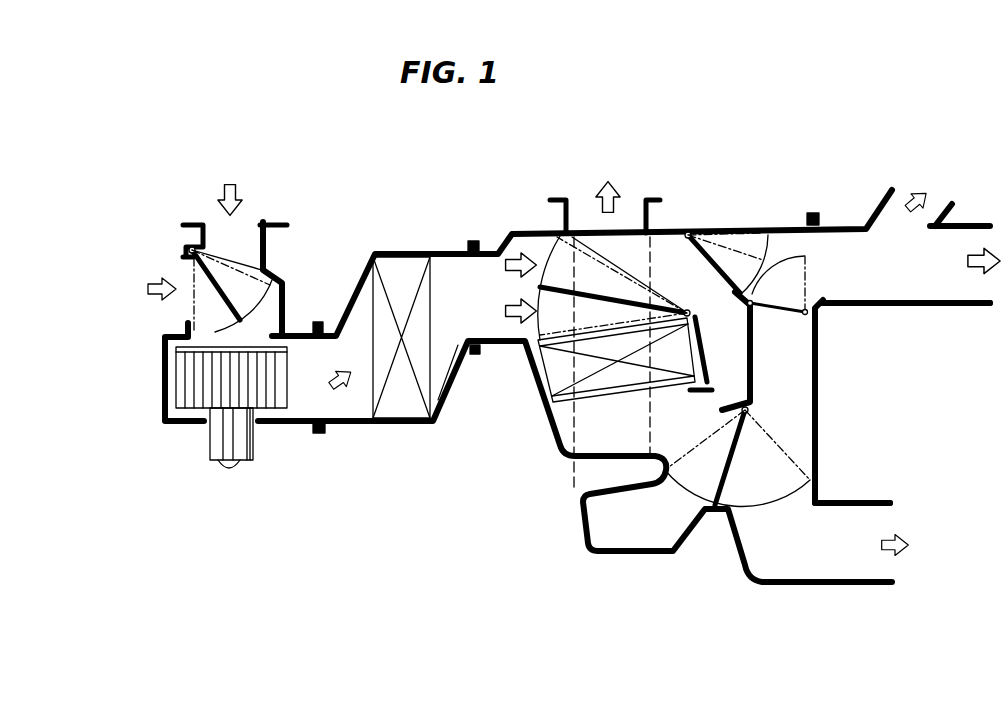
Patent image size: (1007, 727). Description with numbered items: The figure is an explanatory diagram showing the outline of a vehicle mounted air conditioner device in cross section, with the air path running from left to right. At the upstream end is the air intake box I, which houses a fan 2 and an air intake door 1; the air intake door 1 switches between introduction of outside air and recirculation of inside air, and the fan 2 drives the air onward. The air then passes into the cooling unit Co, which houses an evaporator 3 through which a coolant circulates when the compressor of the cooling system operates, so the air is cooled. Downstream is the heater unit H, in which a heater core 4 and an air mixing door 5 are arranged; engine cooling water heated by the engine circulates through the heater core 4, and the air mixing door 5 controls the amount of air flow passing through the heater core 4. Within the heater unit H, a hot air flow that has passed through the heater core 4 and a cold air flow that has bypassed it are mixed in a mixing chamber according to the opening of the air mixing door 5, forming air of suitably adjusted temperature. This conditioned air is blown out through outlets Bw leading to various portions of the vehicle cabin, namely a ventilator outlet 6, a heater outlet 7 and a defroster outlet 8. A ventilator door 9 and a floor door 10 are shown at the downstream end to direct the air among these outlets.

The air intake door 1 is at (240, 267).
The air intake box I is at (275, 258).
The fan 2 is at (251, 443).
The evaporator 3 is at (403, 403).
The cooling unit Co is at (396, 334).
The heater core 4 is at (620, 392).
The heater unit H is at (625, 304).
The air mixing door 5 is at (546, 245).
The ventilator outlet 6 is at (962, 237).
The heater outlet 7 is at (893, 528).
The defroster outlet 8 is at (625, 212).
The ventilator door 9 is at (728, 250).
The floor door 10 is at (733, 468).
The outlets Bw is at (981, 283).